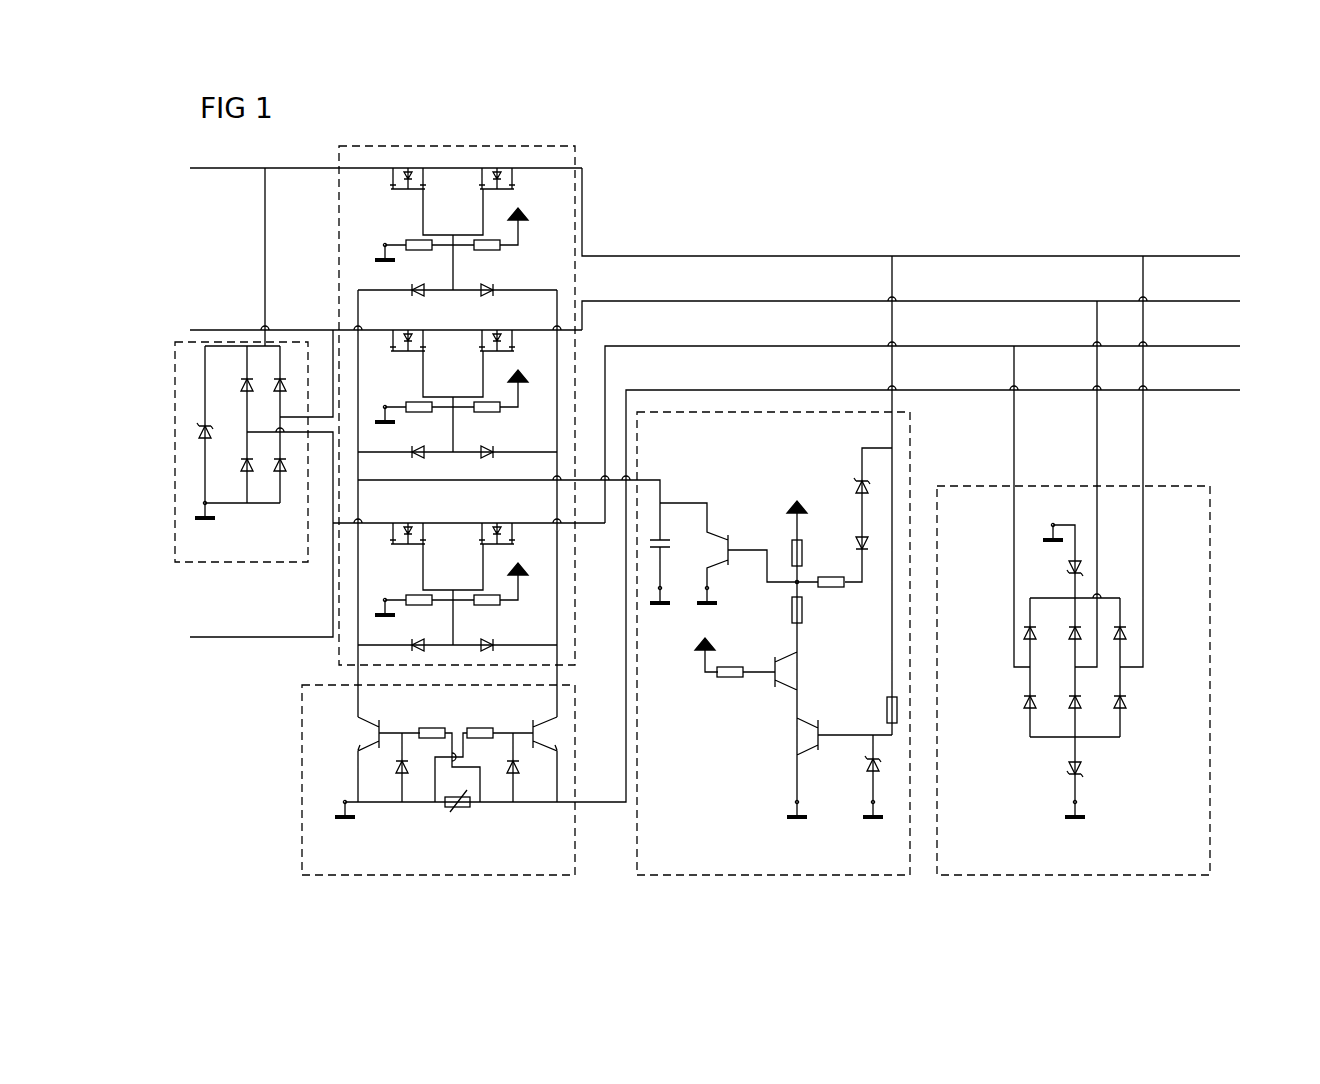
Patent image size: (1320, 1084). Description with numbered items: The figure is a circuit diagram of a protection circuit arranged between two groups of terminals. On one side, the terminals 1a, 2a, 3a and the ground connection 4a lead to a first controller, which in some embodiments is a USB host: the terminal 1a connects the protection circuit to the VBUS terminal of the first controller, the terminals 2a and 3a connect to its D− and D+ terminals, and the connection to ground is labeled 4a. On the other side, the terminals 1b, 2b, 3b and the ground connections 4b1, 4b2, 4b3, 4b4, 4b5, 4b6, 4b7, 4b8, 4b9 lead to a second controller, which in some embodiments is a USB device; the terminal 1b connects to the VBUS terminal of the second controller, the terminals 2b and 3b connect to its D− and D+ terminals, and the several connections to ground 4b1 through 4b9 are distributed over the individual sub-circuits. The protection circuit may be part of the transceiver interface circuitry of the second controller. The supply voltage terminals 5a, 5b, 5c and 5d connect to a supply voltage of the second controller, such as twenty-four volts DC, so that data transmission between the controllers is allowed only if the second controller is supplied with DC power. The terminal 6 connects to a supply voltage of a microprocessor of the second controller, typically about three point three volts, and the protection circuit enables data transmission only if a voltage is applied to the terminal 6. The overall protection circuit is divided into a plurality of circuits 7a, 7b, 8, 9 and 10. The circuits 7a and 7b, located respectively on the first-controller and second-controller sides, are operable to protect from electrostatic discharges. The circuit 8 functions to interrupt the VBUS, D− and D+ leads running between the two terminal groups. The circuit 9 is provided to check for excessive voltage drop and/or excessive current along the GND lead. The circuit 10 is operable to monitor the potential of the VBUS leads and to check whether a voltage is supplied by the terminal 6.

The terminal 1a is at (930, 220).
The terminal 1b is at (366, 169).
The terminal 2a is at (930, 308).
The terminal 2b is at (366, 331).
The terminal 3a is at (942, 427).
The terminal 3b is at (377, 540).
The ground connection 4a is at (812, 589).
The ground connection 4b1 is at (438, 791).
The ground connection 4b2 is at (627, 560).
The ground connection 4b3 is at (873, 810).
The ground connection 4b4 is at (1078, 560).
The ground connection 4b5 is at (1050, 560).
The ground connection 4b6 is at (457, 587).
The ground connection 4b7 is at (457, 394).
The ground connection 4b8 is at (457, 232).
The ground connection 4b9 is at (259, 365).
The supply voltage terminal 5a is at (531, 558).
The supply voltage terminal 5b is at (531, 365).
The supply voltage terminal 5c is at (530, 204).
The supply voltage terminal 5d is at (812, 496).
The terminal 6 is at (712, 633).
The circuit 7a is at (1226, 654).
The circuit 7b is at (169, 425).
The circuit 8 is at (332, 213).
The circuit 9 is at (291, 763).
The circuit 10 is at (629, 808).